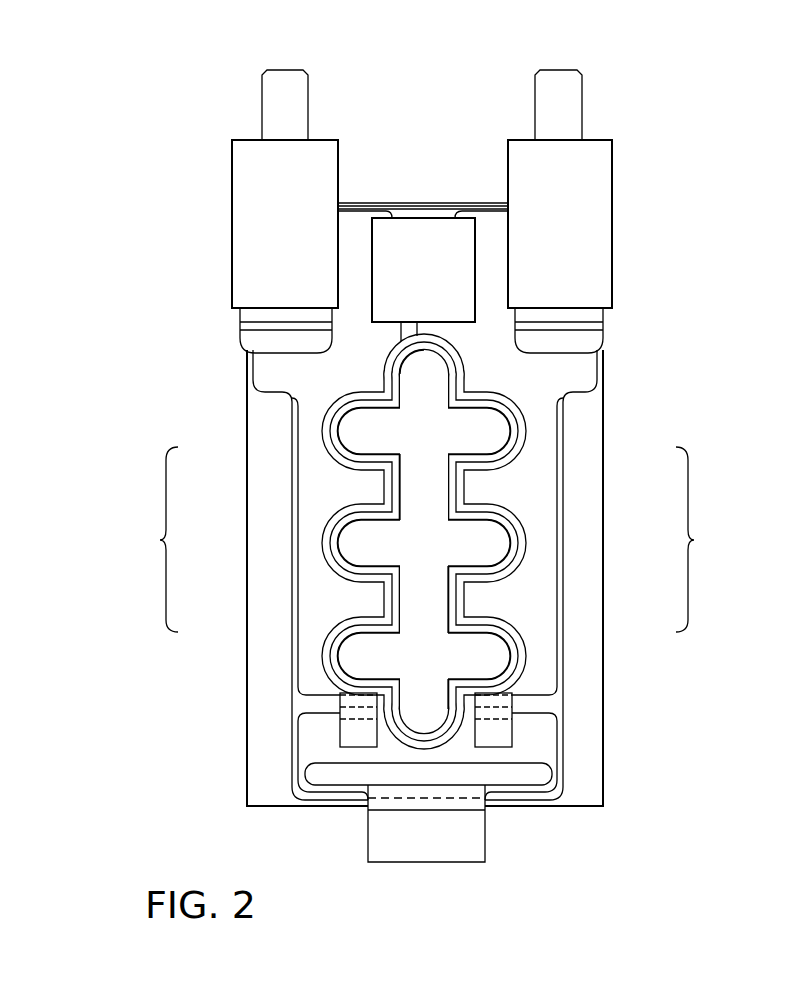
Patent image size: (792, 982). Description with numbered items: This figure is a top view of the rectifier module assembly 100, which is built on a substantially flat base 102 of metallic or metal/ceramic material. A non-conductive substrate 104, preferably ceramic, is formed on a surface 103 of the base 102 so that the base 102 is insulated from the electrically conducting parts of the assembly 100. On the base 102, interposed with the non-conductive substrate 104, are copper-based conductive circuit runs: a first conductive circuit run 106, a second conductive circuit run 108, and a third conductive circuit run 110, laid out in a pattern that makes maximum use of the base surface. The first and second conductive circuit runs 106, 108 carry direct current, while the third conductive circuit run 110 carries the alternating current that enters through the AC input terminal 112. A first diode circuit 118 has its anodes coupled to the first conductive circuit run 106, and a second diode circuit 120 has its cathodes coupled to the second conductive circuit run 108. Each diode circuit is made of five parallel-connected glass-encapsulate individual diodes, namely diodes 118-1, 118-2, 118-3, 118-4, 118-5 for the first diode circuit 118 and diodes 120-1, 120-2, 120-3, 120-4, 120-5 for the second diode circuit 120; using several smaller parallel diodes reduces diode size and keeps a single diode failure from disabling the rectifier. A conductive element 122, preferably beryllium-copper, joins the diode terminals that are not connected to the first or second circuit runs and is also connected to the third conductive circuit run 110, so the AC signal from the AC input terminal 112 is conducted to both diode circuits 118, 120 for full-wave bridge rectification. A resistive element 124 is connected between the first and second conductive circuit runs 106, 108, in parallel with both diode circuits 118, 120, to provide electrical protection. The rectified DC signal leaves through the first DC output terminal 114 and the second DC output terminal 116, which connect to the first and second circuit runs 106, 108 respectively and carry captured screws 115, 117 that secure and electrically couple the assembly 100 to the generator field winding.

The rectifier module assembly 100 is at (236, 101).
The base 102 is at (603, 793).
The surface 103 is at (588, 757).
The non-conductive substrate 104 is at (563, 700).
The first conductive circuit run 106 is at (522, 378).
The second conductive circuit run 108 is at (348, 615).
The third conductive circuit run 110 is at (302, 753).
The AC input terminal 112 is at (462, 847).
The first DC output terminal 114 is at (579, 218).
The captured screw 115 is at (572, 99).
The second DC output terminal 116 is at (305, 218).
The captured screw 117 is at (290, 99).
The first diode circuit 118 is at (709, 539).
The individual diode 118-1 is at (520, 436).
The individual diode 118-2 is at (517, 523).
The individual diode 118-3 is at (497, 622).
The individual diode 118-4 is at (460, 602).
The individual diode 118-5 is at (467, 683).
The second diode circuit 120 is at (141, 539).
The individual diode 120-1 is at (388, 380).
The individual diode 120-2 is at (333, 453).
The individual diode 120-3 is at (337, 503).
The individual diode 120-4 is at (325, 545).
The individual diode 120-5 is at (328, 647).
The conductive element 122 is at (446, 445).
The resistive element 124 is at (446, 285).